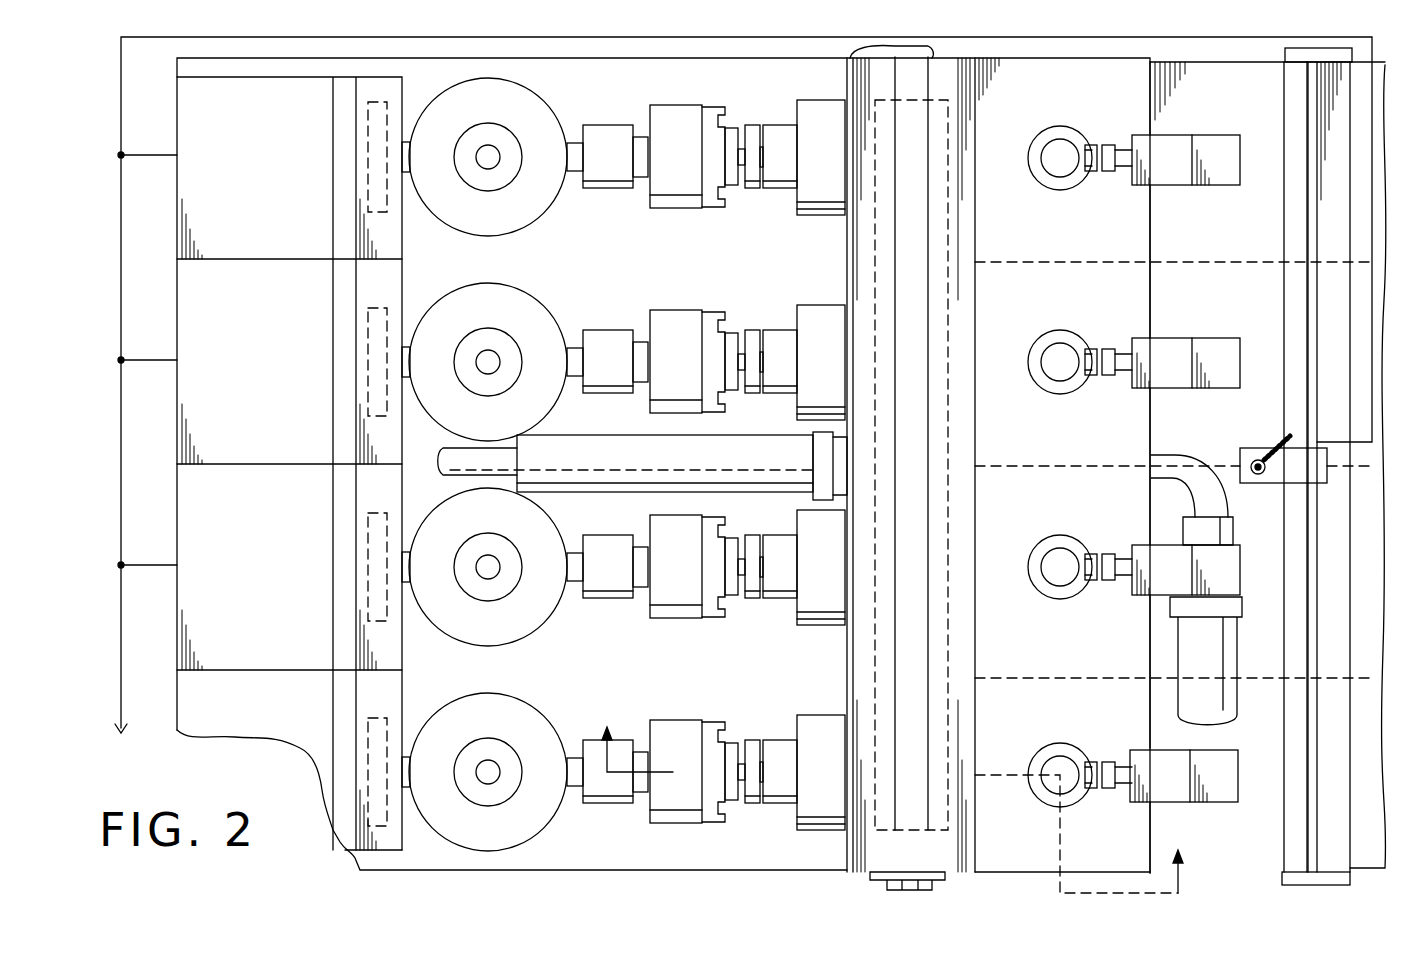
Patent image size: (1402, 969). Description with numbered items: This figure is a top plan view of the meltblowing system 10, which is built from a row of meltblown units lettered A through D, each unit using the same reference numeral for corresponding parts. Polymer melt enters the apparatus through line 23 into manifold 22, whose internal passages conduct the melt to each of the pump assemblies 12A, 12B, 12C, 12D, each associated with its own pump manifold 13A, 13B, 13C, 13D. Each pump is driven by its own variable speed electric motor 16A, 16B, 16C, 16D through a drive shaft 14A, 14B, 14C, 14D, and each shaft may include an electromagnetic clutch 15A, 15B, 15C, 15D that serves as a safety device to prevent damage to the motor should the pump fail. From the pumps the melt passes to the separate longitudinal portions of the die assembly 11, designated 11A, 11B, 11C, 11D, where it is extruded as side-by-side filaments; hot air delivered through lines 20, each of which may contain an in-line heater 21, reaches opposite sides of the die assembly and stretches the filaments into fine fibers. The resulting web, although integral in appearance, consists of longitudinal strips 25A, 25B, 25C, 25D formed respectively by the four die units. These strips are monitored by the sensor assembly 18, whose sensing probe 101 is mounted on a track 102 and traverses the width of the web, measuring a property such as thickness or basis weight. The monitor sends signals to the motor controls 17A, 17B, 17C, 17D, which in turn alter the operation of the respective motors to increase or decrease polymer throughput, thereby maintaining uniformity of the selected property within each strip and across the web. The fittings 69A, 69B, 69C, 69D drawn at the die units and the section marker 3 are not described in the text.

The meltblowing system 10 is at (323, 822).
The section line 3- 3 is at (892, 795).
The die assembly 11 is at (1158, 270).
The die assembly 11D is at (998, 116).
The die assembly 11C is at (993, 309).
The die assembly 11B is at (993, 502).
The die assembly 11A is at (1096, 721).
The pump assembly 12D is at (755, 128).
The pump assembly 12C is at (775, 330).
The pump assembly 12B is at (772, 602).
The pump assembly 12A is at (776, 740).
The pump manifold 13D is at (815, 130).
The pump manifold 13C is at (820, 327).
The pump manifold 13B is at (824, 590).
The pump manifold 13A is at (822, 740).
The drive shaft 14D is at (578, 142).
The drive shaft 14C is at (576, 347).
The drive shaft 14B is at (577, 555).
The drive shaft 14A is at (575, 760).
The electromagnetic clutch 15D is at (663, 180).
The electromagnetic clutch 15C is at (683, 385).
The electromagnetic clutch 15B is at (670, 585).
The electromagnetic clutch 15A is at (682, 740).
The electric motor 16D is at (435, 130).
The electric motor 16C is at (445, 330).
The electric motor 16B is at (447, 528).
The electric motor 16A is at (483, 710).
The motor controls 17D is at (290, 174).
The motor controls 17C is at (290, 372).
The motor controls 17B is at (290, 579).
The motor controls 17A is at (293, 724).
The sensor assembly 18 is at (1328, 472).
The hot air line 20 is at (1162, 465).
The in-line heater 21 is at (651, 476).
The manifold 22 is at (845, 233).
The line 23 is at (900, 47).
The web strip 25D is at (1210, 229).
The web strip 25C is at (1165, 334).
The web strip 25B is at (1233, 521).
The web strip 25A is at (1233, 749).
The ring fitting D 69D is at (1058, 150).
The ring fitting C 69C is at (1060, 355).
The ring fitting B 69B is at (1060, 560).
The ring fitting A 69A is at (1058, 765).
The sensing probe 101 is at (1258, 460).
The track 102 is at (1312, 304).